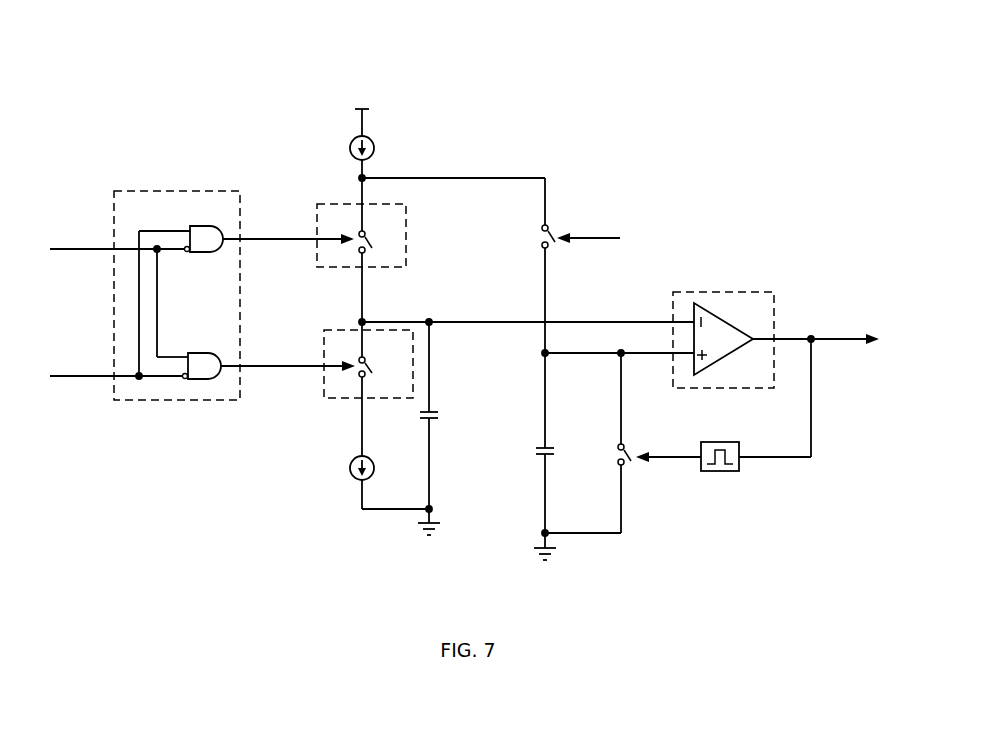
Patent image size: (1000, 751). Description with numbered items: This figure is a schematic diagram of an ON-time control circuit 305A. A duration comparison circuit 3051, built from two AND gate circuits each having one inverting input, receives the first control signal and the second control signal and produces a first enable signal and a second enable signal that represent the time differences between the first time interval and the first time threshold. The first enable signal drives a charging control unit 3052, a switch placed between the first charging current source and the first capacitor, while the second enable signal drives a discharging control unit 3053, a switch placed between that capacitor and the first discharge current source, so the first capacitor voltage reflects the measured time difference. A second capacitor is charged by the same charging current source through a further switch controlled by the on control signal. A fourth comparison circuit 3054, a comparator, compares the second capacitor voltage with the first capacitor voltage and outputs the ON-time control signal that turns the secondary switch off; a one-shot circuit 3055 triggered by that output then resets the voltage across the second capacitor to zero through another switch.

The ON-time control circuit 305A is at (456, 46).
The duration comparison circuit 3051 is at (137, 401).
The charging control unit 3052 is at (328, 268).
The discharging control unit 3053 is at (331, 399).
The fourth comparison circuit 3054 is at (688, 389).
The one-shot circuit 3055 is at (712, 472).